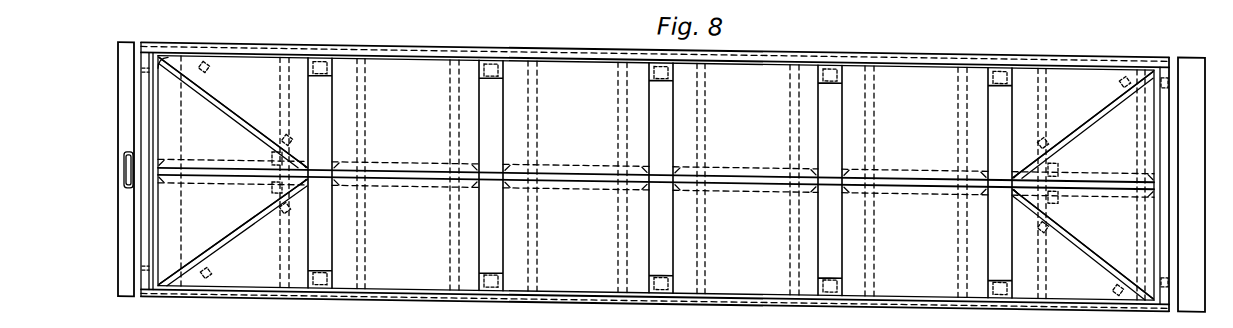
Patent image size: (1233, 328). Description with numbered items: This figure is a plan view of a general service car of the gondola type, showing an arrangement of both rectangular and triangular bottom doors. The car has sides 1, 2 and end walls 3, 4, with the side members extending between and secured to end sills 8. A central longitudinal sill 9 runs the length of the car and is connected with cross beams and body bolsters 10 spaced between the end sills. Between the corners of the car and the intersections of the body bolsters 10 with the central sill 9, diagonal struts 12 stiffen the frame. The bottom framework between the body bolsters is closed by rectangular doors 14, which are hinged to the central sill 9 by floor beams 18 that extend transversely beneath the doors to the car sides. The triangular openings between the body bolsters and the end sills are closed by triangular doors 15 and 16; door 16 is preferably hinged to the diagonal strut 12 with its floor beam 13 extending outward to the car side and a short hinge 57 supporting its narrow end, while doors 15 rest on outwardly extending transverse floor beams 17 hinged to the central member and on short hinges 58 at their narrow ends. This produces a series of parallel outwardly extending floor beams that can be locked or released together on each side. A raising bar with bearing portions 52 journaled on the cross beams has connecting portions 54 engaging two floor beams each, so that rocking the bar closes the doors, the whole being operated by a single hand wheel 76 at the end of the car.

The side 1 is at (573, 285).
The side 2 is at (585, 48).
The end wall 3 is at (167, 73).
The end wall 4 is at (1170, 101).
The end sill 8 is at (122, 95).
The central longitudinal sill 9 is at (404, 176).
The body bolster 10 is at (660, 178).
The diagonal strut 12 is at (242, 100).
The floor beam 13 is at (283, 68).
The rectangular door 14 is at (656, 177).
The triangular door 15 is at (656, 182).
The triangular door 16 is at (656, 177).
The transverse floor beam 17 is at (187, 110).
The floor beam 18 is at (618, 236).
The bearing portion 52 is at (683, 76).
The connecting portion 54 is at (782, 37).
The short hinge 57 is at (210, 63).
The short hinge 58 is at (275, 183).
The hand wheel 76 is at (125, 171).